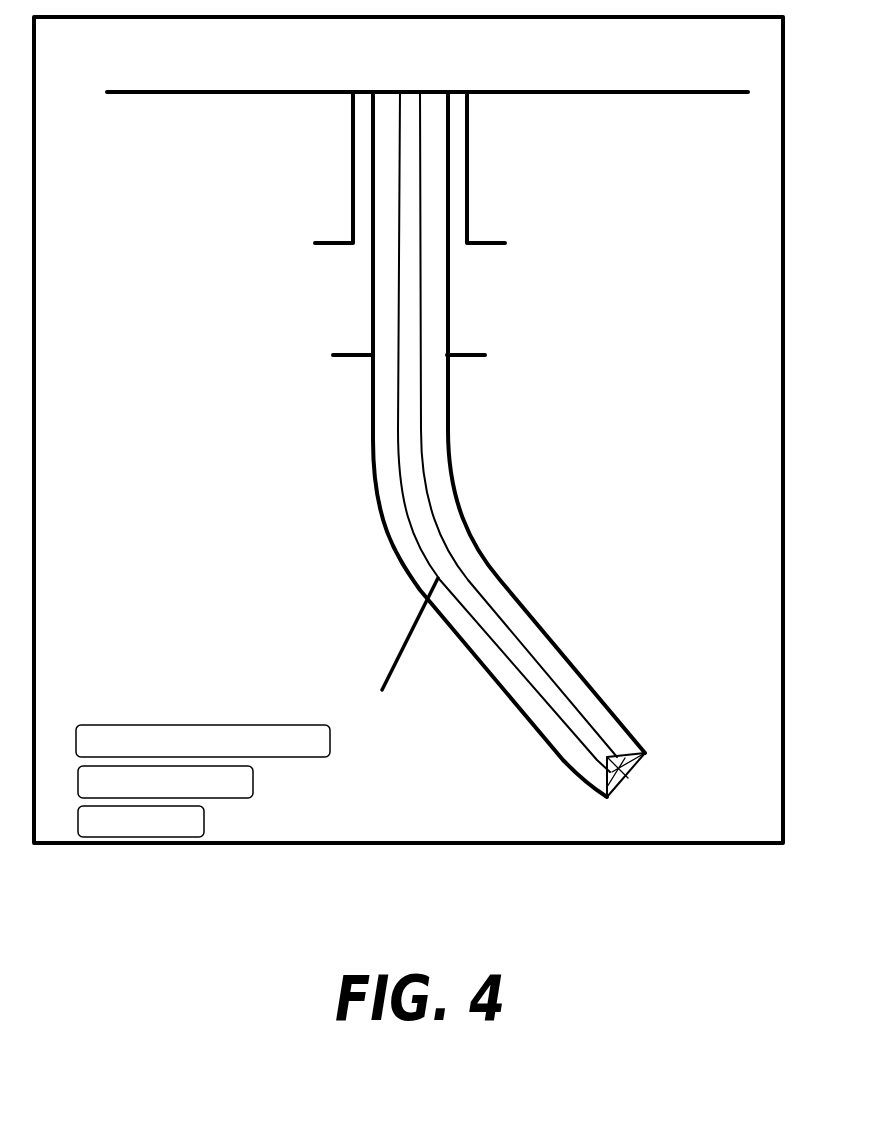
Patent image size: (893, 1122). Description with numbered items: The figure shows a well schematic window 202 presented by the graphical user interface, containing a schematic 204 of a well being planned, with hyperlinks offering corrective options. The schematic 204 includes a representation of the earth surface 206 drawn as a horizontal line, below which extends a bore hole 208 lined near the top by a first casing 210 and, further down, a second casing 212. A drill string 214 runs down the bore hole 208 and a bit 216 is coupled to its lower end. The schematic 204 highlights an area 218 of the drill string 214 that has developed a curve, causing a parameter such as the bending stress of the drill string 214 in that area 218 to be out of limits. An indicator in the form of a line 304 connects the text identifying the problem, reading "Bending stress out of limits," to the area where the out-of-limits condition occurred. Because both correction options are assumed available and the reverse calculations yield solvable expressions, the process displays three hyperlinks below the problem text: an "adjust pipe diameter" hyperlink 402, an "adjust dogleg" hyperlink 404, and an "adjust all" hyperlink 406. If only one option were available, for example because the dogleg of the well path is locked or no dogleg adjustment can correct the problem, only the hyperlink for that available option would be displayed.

The well schematic window 202 is at (185, 845).
The schematic 204 is at (183, 73).
The earth surface 206 is at (560, 92).
The bore hole 208 is at (595, 703).
The first casing 210 is at (484, 243).
The second casing 212 is at (468, 355).
The drill string 214 is at (422, 430).
The bit 216 is at (625, 747).
The area 218 is at (505, 542).
The line 304 is at (408, 633).
The adjust pipe diameter hyperlink 402 is at (330, 740).
The adjust dogleg hyperlink 404 is at (253, 782).
The adjust all hyperlink 406 is at (204, 820).